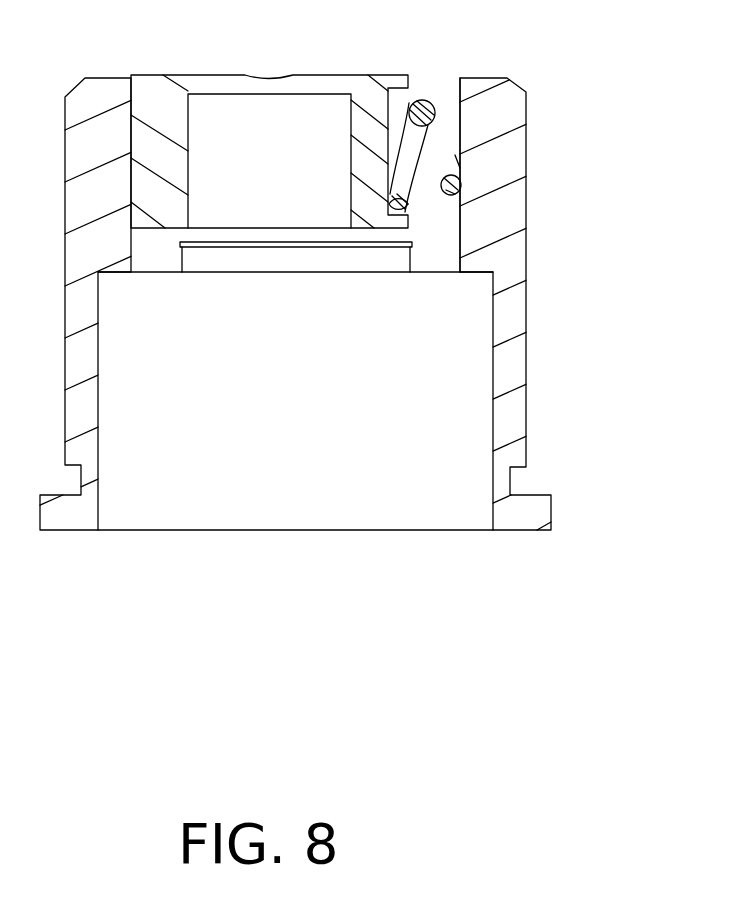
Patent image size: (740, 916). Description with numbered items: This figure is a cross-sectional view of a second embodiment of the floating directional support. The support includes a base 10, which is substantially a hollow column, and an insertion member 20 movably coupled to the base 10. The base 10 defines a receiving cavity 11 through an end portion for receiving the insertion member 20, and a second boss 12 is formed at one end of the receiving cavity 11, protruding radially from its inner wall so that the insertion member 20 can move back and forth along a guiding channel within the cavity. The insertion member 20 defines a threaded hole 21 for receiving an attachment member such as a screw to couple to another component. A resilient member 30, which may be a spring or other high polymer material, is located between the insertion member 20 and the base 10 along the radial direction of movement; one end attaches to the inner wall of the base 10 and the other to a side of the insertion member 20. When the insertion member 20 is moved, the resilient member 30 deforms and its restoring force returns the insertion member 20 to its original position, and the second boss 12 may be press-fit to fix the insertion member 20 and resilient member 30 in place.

The base 10 is at (513, 247).
The receiving cavity 11 is at (448, 137).
The second boss 12 is at (362, 258).
The insertion member 20 is at (158, 97).
The threaded hole 21 is at (300, 123).
The resilient member 30 is at (422, 113).